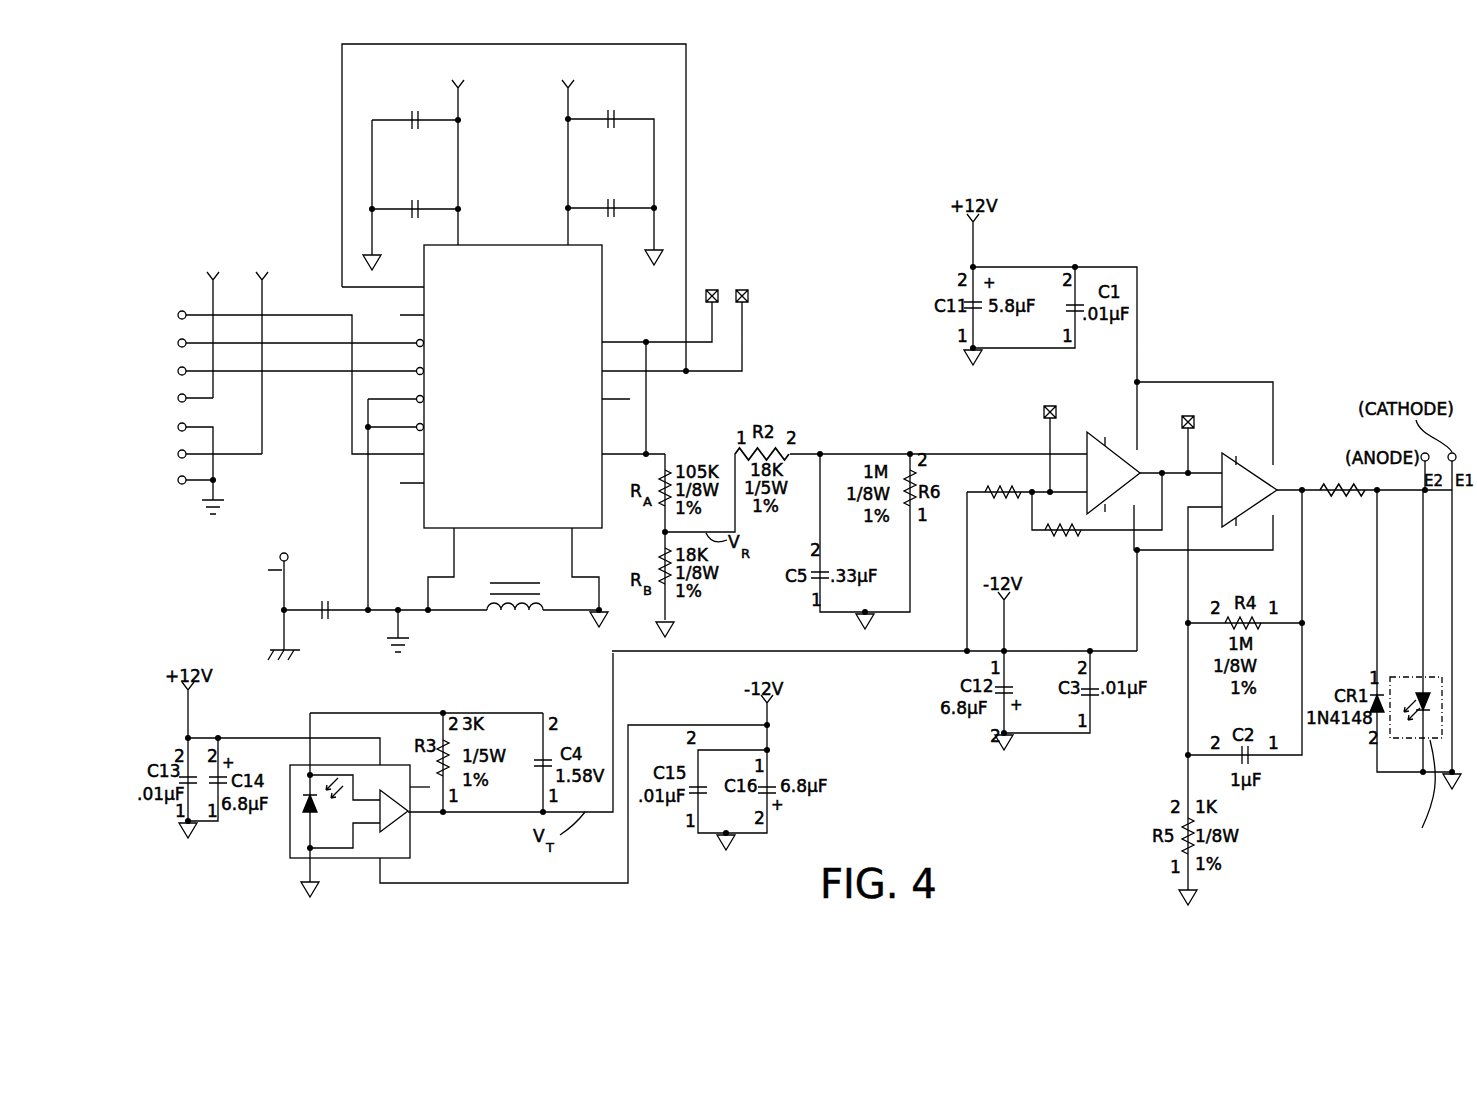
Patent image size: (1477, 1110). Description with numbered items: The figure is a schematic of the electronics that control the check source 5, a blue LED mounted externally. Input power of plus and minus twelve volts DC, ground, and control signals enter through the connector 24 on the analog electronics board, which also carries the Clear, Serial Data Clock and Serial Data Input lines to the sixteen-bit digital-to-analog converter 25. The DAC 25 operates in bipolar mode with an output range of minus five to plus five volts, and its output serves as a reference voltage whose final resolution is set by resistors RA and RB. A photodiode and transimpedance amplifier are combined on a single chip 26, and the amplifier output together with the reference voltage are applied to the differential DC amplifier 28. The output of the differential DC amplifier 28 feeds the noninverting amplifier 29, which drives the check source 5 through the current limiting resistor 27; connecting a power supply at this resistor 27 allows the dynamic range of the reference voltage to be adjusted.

The check source 5 is at (1418, 740).
The connector J1 24 is at (182, 486).
The digital-to-analog converter 25 is at (512, 245).
The single chip 26 is at (290, 840).
The current limiting resistor 27 is at (1340, 470).
The differential DC amplifier 28 is at (1118, 488).
The noninverting amplifier 29 is at (1220, 478).